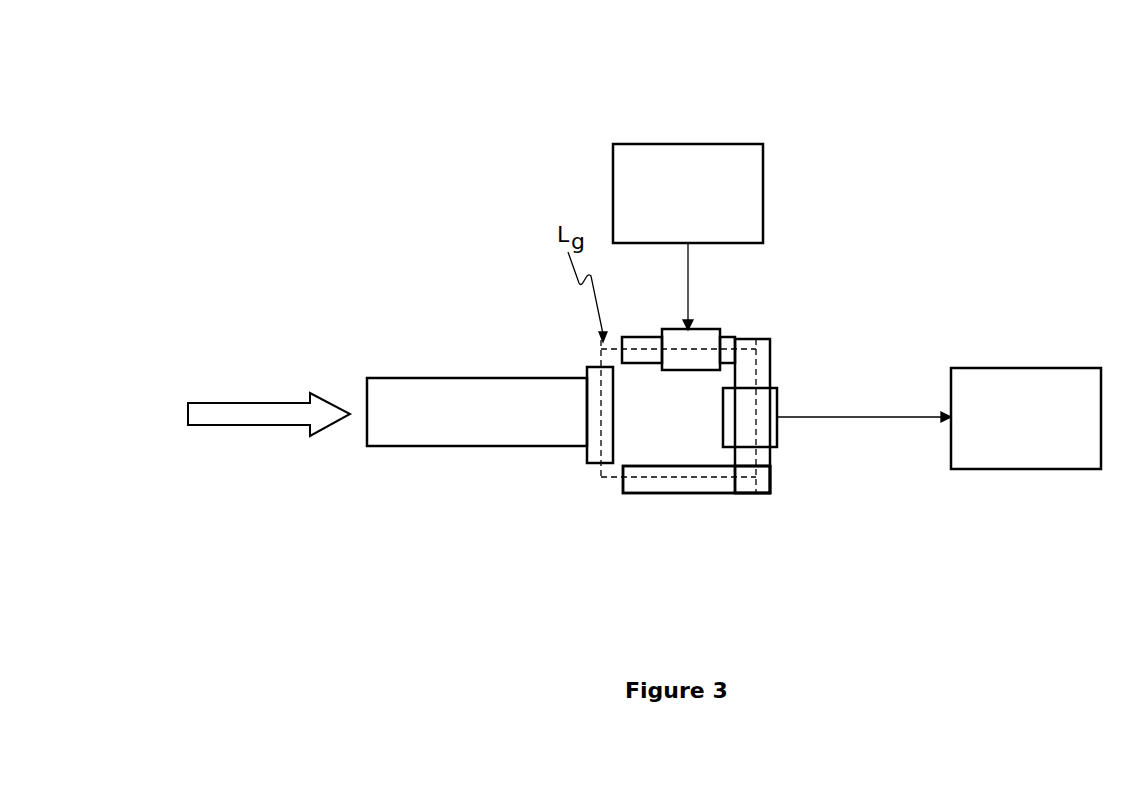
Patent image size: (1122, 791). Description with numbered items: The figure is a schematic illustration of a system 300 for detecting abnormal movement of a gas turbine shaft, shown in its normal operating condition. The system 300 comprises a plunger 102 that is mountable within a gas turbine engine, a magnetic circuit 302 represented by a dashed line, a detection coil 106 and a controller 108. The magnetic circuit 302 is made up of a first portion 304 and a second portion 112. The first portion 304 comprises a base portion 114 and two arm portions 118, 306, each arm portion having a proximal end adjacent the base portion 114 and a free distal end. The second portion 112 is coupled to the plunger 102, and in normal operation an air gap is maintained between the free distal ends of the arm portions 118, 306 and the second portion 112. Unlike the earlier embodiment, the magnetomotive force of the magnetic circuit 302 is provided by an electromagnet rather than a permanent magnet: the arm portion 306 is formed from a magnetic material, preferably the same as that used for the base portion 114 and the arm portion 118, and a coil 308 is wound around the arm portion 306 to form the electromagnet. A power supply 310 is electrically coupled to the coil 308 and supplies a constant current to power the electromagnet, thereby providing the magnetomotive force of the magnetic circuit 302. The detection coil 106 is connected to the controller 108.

The system 300 is at (896, 184).
The plunger 102 is at (520, 405).
The second portion 112 is at (586, 370).
The coil 308 is at (692, 343).
The arm portion 306 is at (737, 342).
The first portion 304 is at (780, 348).
The detection coil 106 is at (763, 413).
The magnetic circuit 302 is at (645, 482).
The arm portion 118 is at (673, 487).
The base portion 114 is at (767, 481).
The power supply 310 is at (643, 190).
The controller 108 is at (1073, 390).